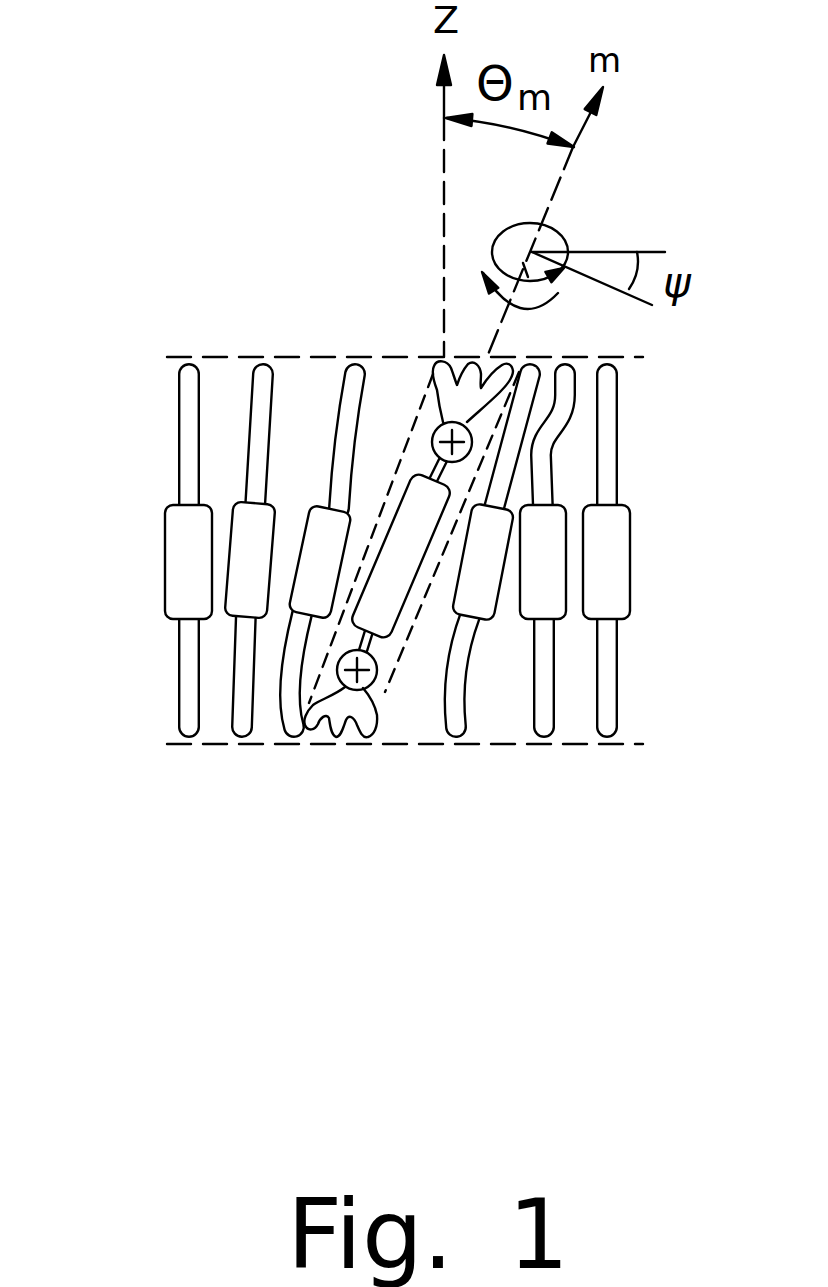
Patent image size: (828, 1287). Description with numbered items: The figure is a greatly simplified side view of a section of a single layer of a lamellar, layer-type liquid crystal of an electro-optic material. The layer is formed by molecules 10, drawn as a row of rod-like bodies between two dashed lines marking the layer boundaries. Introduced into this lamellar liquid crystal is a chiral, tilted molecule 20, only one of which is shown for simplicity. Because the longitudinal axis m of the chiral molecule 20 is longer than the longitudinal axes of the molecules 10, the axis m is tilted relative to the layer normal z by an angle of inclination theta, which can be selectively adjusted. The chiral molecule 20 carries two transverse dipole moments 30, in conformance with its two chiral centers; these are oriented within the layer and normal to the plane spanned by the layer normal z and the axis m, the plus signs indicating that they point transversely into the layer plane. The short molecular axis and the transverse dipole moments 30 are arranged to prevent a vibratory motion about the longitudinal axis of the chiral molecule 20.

The molecules 10 is at (175, 542).
The chiral tilted molecule 20 is at (397, 597).
The transverse dipole moments 30 is at (368, 682).